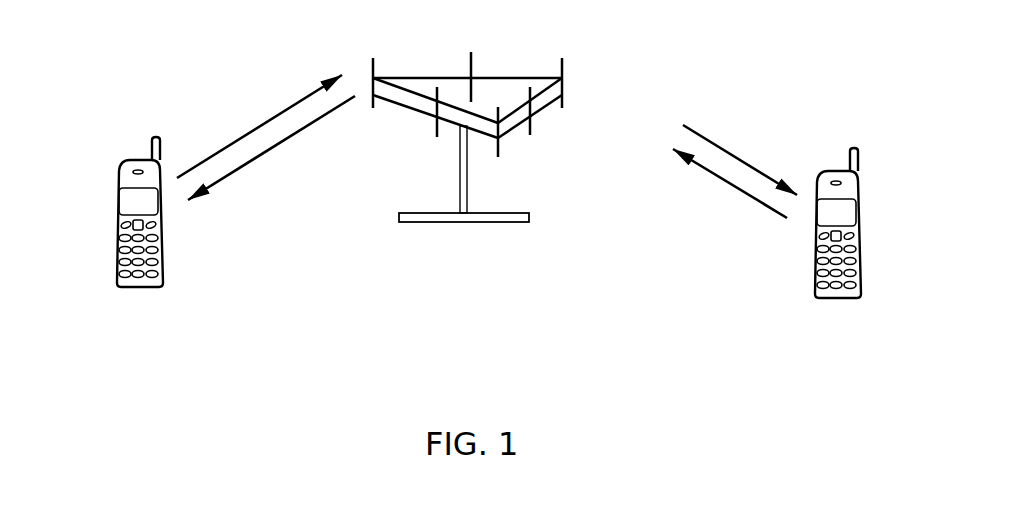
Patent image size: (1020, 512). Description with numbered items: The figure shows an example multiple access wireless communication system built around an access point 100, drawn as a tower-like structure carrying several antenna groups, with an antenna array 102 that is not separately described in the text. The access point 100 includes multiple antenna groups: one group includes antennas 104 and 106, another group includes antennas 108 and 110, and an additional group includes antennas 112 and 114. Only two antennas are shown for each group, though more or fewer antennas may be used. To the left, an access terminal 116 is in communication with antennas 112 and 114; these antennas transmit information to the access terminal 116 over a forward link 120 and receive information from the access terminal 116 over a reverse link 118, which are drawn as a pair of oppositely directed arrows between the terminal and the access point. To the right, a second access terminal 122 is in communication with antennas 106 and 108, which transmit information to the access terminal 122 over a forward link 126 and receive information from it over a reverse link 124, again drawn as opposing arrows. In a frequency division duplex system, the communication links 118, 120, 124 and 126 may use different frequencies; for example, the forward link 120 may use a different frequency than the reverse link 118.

The access point 100 is at (477, 222).
The antenna array 102 is at (467, 108).
The antenna 104 is at (502, 152).
The antenna 106 is at (533, 128).
The antenna 108 is at (563, 98).
The antenna 110 is at (472, 60).
The antenna 112 is at (372, 72).
The antenna 114 is at (435, 130).
The access terminal 116 is at (113, 193).
The reverse link 118 is at (273, 122).
The forward link 120 is at (250, 163).
The access terminal 122 is at (863, 227).
The reverse link 124 is at (743, 195).
The forward link 126 is at (733, 153).